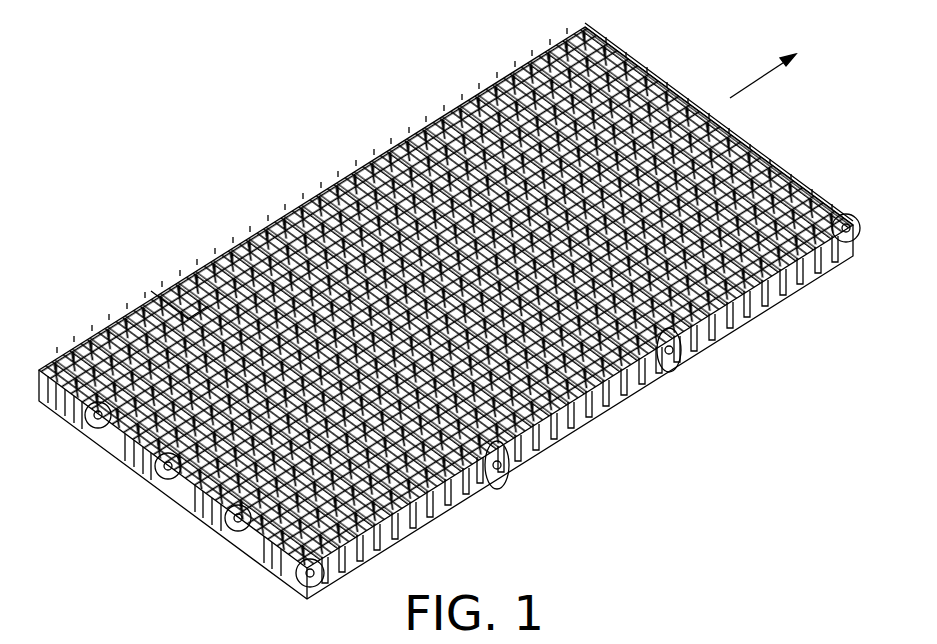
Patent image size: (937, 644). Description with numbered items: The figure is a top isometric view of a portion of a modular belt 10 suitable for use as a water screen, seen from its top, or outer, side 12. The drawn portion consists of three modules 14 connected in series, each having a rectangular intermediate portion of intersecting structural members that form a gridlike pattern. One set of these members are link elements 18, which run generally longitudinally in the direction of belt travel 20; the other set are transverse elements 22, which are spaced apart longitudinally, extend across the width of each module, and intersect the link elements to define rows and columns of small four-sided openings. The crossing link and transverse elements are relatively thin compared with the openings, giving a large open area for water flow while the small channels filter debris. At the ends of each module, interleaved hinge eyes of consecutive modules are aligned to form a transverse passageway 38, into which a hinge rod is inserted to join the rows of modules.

The modular belt 10 is at (234, 72).
The top side 12 is at (143, 283).
The module 14 is at (553, 34).
The link element 18 is at (470, 480).
The direction of belt travel 20 is at (750, 70).
The transverse element 22 is at (502, 458).
The transverse passageway 38 is at (673, 352).